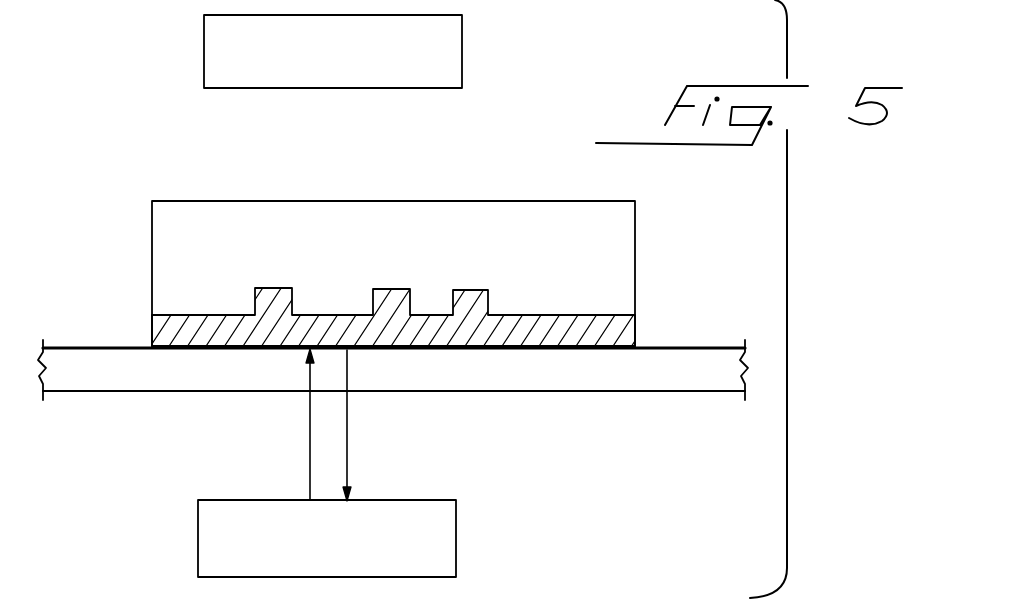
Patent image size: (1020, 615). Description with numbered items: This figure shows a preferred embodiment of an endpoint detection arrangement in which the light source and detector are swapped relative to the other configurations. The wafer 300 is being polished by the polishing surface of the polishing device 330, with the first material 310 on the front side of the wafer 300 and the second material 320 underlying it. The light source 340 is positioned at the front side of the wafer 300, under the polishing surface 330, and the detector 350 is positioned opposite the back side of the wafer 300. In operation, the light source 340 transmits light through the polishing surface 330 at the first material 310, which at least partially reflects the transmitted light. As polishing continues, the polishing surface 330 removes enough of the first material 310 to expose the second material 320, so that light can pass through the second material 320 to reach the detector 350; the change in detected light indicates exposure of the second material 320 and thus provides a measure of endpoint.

The wafer 300 is at (393, 249).
The first material 310 is at (635, 328).
The second material 320 is at (388, 212).
The polishing surface of the polishing device 330 is at (655, 395).
The light source 340 is at (456, 523).
The detector 350 is at (462, 63).